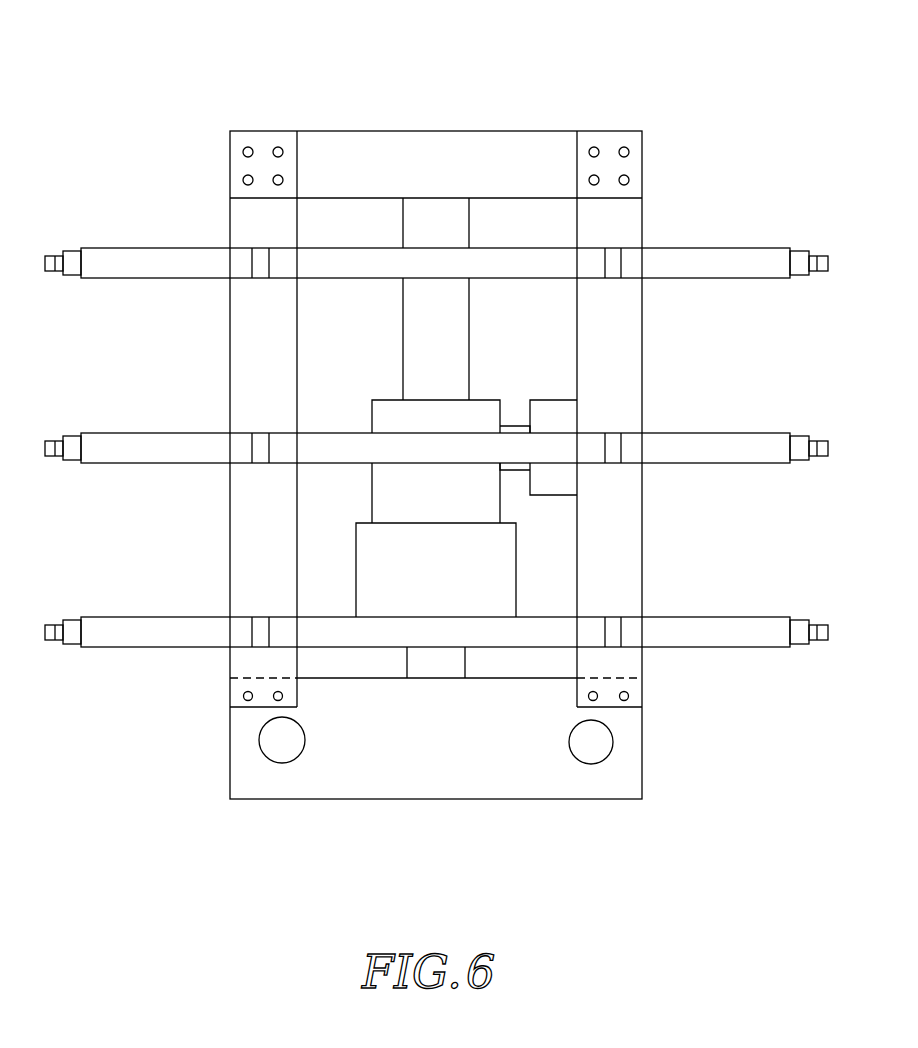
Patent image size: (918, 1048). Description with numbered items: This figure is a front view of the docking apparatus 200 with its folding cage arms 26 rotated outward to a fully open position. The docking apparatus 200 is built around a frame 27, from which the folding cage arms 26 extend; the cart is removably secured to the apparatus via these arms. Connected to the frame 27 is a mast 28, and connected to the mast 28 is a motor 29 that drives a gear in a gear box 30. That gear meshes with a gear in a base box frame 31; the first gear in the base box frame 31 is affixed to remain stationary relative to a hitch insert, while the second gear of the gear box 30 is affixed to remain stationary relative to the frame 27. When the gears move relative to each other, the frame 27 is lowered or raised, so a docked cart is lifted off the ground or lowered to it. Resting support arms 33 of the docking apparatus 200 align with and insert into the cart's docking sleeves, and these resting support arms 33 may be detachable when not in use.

The docking apparatus 200 is at (462, 105).
The folding cage arms 26 is at (772, 280).
The frame 27 is at (618, 560).
The mast 28 is at (425, 297).
The motor 29 is at (556, 399).
The gear box 30 is at (484, 399).
The base box frame 31 is at (462, 563).
The resting support arms 33 is at (295, 737).